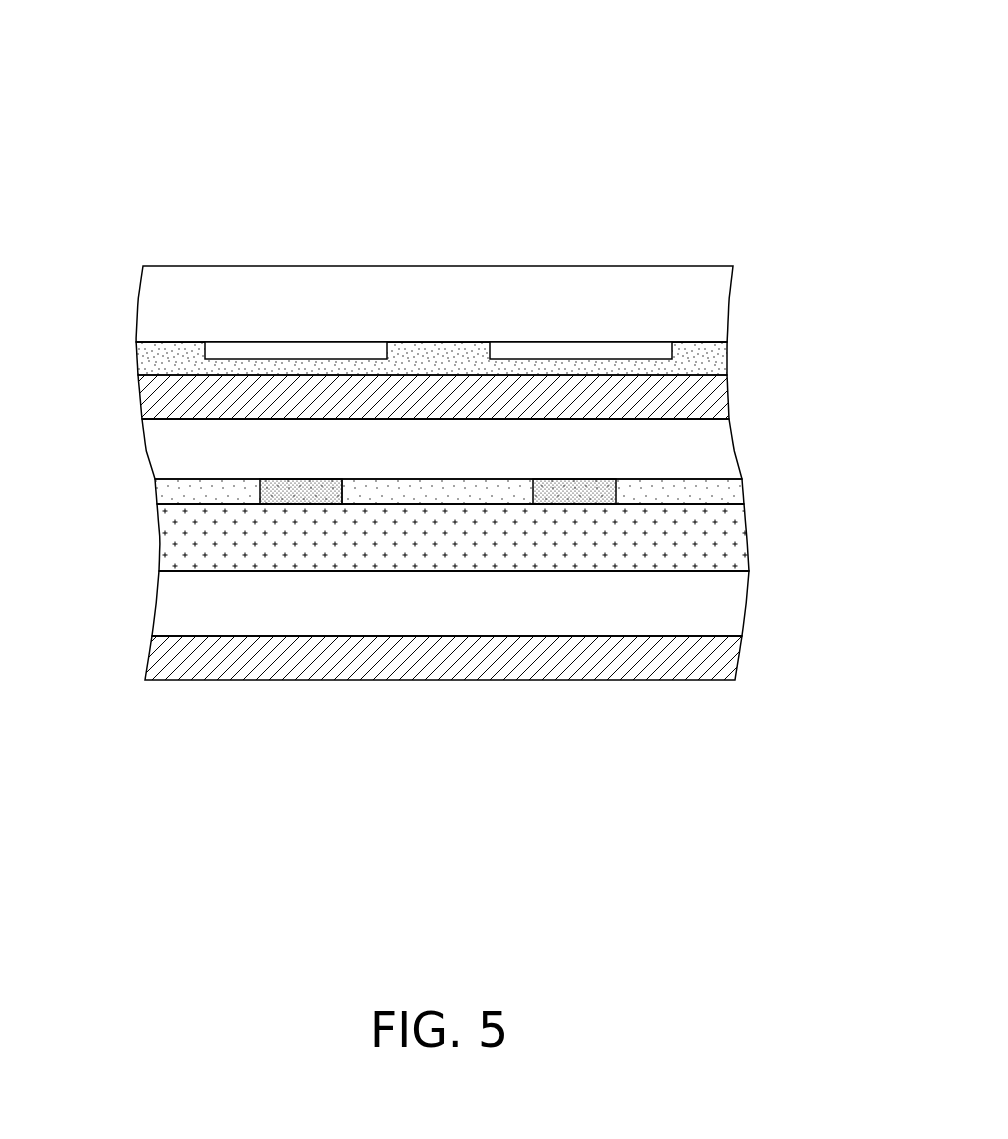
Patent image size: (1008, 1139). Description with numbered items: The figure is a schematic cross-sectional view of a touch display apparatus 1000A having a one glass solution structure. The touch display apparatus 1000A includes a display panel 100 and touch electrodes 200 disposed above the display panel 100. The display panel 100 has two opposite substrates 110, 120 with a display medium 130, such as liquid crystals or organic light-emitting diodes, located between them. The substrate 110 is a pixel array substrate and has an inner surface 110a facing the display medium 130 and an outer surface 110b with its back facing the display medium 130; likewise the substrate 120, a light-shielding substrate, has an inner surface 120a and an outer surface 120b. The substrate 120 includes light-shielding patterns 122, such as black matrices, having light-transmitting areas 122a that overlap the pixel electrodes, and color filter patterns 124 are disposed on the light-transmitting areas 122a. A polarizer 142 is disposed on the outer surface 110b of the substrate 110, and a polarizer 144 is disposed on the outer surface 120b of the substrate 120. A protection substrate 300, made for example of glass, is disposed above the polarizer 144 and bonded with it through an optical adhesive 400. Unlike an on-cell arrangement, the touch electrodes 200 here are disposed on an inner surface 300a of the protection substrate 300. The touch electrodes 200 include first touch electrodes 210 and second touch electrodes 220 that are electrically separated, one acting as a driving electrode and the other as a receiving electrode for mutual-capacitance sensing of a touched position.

The display panel 100 is at (128, 4).
The substrate 110 is at (751, 572).
The inner surface 110a is at (176, 565).
The outer surface 110b is at (172, 639).
The substrate 120 is at (751, 419).
The inner surface 120a is at (176, 505).
The outer surface 120b is at (169, 416).
The light-shielding patterns 122 is at (300, 494).
The light-transmitting areas 122a is at (346, 492).
The color filter patterns 124 is at (174, 488).
The display medium 130 is at (751, 505).
The polarizer 142 is at (738, 668).
The polarizer 144 is at (724, 393).
The touch electrodes 200 is at (438, 281).
The first touch electrodes 210 is at (581, 350).
The second touch electrodes 220 is at (268, 350).
The protection substrate 300 is at (713, 305).
The inner surface 300a is at (156, 346).
The optical adhesive 400 is at (717, 362).
The touch display apparatus 1000A is at (877, 698).